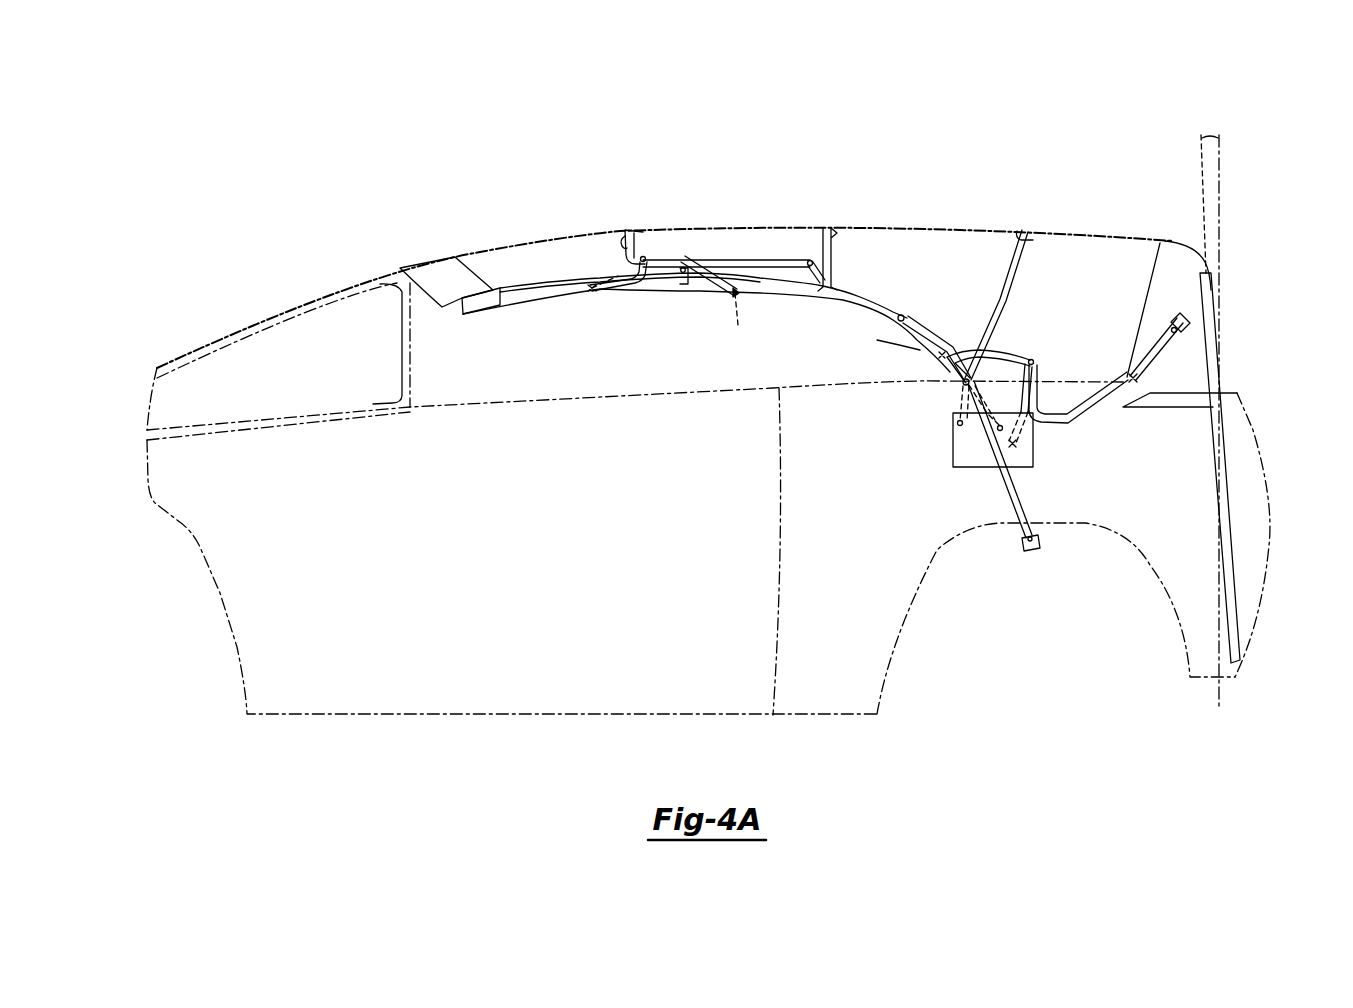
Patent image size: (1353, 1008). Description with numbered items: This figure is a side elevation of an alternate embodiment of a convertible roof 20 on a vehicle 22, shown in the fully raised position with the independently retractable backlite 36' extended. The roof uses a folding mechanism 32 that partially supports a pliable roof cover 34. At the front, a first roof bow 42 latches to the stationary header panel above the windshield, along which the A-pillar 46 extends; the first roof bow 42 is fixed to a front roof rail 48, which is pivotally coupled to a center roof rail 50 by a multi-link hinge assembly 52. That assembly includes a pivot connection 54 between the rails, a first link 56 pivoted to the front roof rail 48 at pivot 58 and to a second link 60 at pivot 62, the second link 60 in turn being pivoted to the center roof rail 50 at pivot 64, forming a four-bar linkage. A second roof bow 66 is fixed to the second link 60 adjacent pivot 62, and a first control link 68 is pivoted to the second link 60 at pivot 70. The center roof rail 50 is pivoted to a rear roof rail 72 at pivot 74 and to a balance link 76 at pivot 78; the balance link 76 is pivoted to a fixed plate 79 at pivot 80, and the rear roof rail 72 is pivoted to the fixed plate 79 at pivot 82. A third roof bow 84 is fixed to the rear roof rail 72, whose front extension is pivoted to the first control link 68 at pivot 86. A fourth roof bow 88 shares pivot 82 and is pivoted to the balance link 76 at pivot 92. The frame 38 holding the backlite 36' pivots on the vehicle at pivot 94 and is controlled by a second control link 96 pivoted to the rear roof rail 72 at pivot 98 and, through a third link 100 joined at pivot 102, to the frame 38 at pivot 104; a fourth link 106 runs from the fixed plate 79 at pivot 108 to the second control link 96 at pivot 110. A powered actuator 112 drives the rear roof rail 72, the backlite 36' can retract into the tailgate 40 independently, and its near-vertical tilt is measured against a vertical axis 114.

The convertible roof 20 is at (835, 156).
The vehicle 22 is at (513, 715).
The folding mechanism 32 is at (925, 196).
The roof cover 34 is at (489, 250).
The backlite 36' is at (1243, 388).
The frame 38 is at (1188, 253).
The tailgate 40 is at (1255, 488).
The first roof bow 42 is at (430, 266).
The A-pillar 46 is at (400, 360).
The front roof rail 48 is at (483, 312).
The center roof rail 50 is at (848, 309).
The multi-link hinge assembly 52 is at (629, 305).
The pivot connection 54 is at (681, 276).
The first link 56 is at (632, 276).
The pivot 58 is at (590, 291).
The second link 60 is at (691, 286).
The pivot 62 is at (645, 256).
The pivot 64 is at (736, 297).
The second roof bow 66 is at (626, 240).
The first control link 68 is at (740, 261).
The pivot 70 is at (683, 260).
The rear roof rail 72 is at (913, 333).
The pivot 74 is at (843, 302).
The balance link 76 is at (915, 320).
The pivot 78 is at (900, 312).
The fixed plate 79 is at (957, 455).
The pivot 80 is at (1005, 430).
The pivot 82 is at (957, 425).
The third roof bow 84 is at (831, 240).
The pivot 86 is at (807, 262).
The fourth roof bow 88 is at (1027, 232).
The pivot 92 is at (962, 385).
The pivot 94 is at (1213, 407).
The second control link 96 is at (1087, 414).
The pivot 98 is at (947, 348).
The third link 100 is at (1153, 358).
The pivot 102 is at (1137, 384).
The pivot 104 is at (1172, 317).
The fourth link 106 is at (1012, 360).
The pivot 108 is at (1016, 449).
The pivot 110 is at (1034, 360).
The powered actuator 112 is at (1003, 493).
The vertical axis 114 is at (1218, 693).